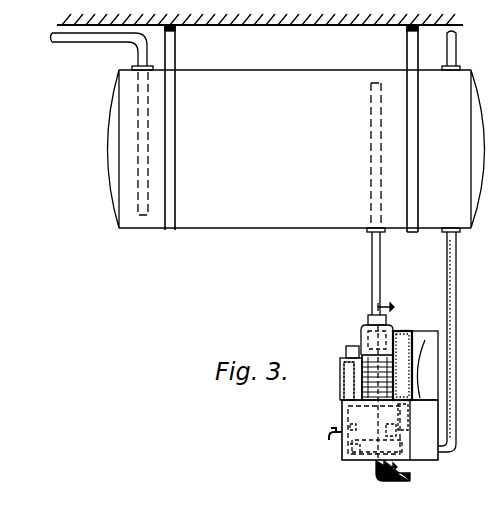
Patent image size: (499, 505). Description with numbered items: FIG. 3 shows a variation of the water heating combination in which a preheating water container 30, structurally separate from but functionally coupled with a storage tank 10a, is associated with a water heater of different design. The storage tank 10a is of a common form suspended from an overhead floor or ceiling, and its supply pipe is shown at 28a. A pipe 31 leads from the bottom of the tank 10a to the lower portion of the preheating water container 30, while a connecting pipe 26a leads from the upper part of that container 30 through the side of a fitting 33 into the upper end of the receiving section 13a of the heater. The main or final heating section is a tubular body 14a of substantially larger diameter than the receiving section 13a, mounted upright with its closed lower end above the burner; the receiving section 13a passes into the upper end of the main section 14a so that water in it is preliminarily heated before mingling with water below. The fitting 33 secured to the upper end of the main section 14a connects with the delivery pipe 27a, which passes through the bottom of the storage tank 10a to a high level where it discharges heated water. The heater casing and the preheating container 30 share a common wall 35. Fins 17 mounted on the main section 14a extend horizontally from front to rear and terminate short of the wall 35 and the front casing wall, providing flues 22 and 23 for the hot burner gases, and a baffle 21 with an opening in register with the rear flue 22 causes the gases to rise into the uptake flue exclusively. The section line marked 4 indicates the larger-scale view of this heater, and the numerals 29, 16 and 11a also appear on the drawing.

The storage tank 10a is at (235, 207).
The supply pipe 28a is at (90, 42).
The vent pipe 29 is at (453, 53).
The delivery pipe 27a is at (377, 258).
The pipe 31 is at (452, 278).
The section line 4 is at (379, 394).
The fitting 33 is at (363, 328).
The receiving section 13a is at (365, 352).
The main section 14a is at (342, 362).
The fins 17 is at (362, 383).
The flue 23 is at (352, 395).
The connecting pipe 26a is at (402, 330).
The preheating water container 30 is at (425, 345).
The common wall 35 is at (428, 373).
The valve housing 16 is at (345, 461).
The rear flue 22 is at (400, 393).
The baffle 21 is at (400, 430).
The drain cock 11a is at (343, 415).